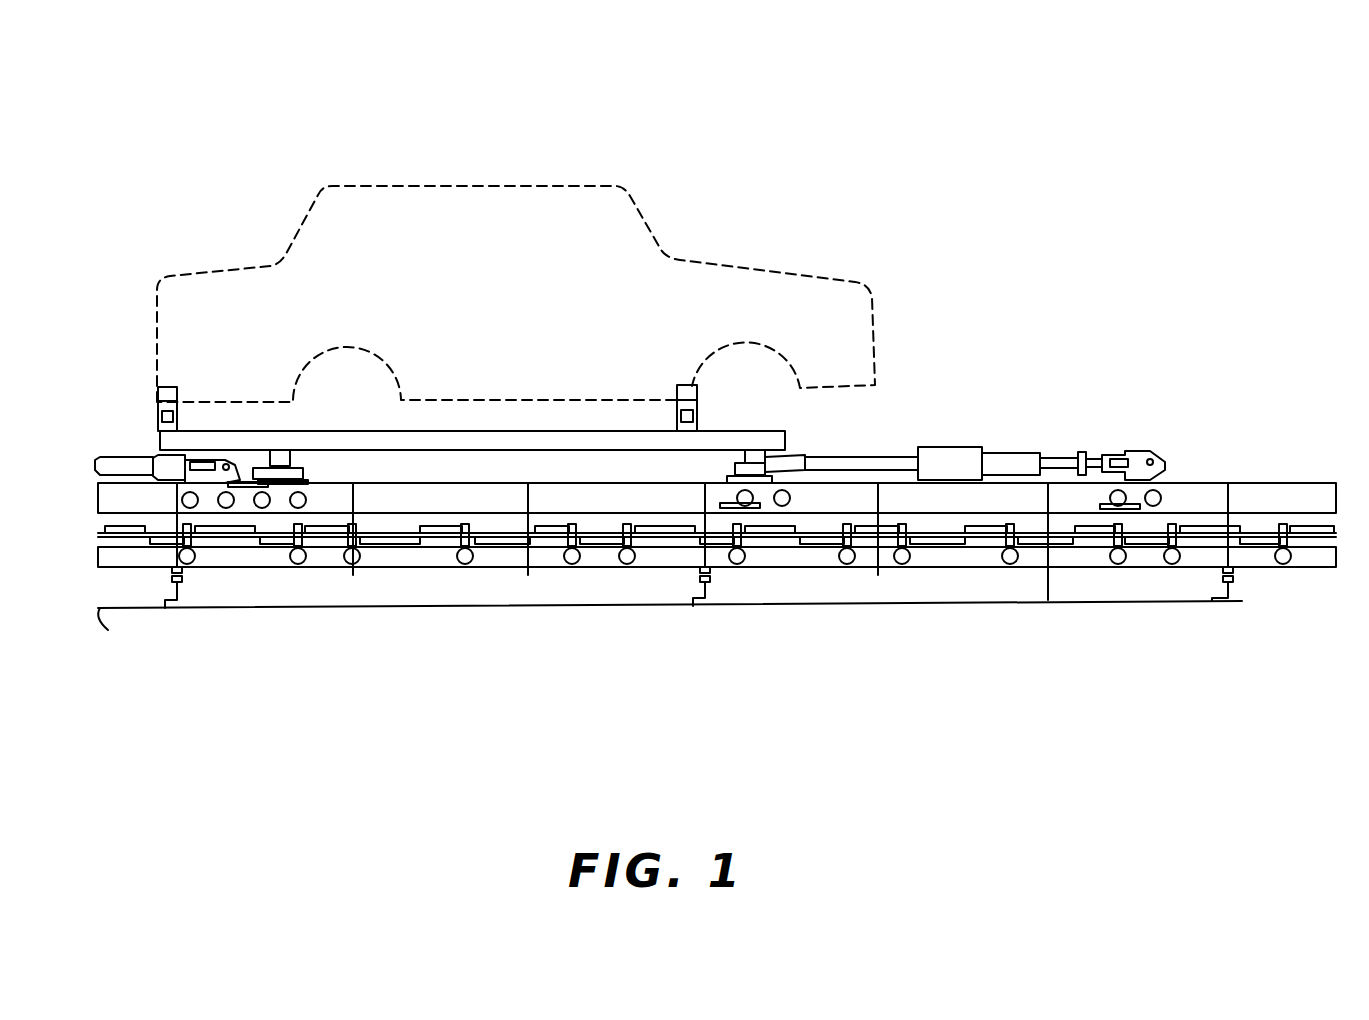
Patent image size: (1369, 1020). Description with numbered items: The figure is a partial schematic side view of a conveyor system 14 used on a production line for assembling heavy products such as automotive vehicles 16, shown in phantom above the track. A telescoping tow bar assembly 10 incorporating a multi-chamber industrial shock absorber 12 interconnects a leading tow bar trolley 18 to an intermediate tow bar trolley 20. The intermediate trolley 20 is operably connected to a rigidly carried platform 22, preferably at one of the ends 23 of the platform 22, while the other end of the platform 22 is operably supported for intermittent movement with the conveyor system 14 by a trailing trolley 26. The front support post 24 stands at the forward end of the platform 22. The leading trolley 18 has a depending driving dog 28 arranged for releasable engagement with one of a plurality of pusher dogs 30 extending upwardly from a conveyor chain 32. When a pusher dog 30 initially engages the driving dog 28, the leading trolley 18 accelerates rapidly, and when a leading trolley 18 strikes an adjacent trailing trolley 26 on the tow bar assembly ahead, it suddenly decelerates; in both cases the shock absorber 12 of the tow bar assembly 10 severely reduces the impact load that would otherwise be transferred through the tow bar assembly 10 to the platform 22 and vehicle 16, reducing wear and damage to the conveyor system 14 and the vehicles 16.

The telescoping tow bar assembly 10 is at (1090, 322).
The multi-chamber industrial shock absorber 12 is at (88, 442).
The conveyor system 14 is at (414, 665).
The automotive vehicle 16 is at (623, 185).
The leading tow bar trolley 18 is at (196, 462).
The intermediate tow bar trolley 20 is at (740, 482).
The platform 22 is at (405, 452).
The end of the platform 23 is at (790, 437).
The front support post 24 is at (158, 446).
The trailing trolley 26 is at (262, 462).
The driving dog 28 is at (1167, 517).
The pusher dog 30 is at (307, 543).
The conveyor chain 32 is at (965, 535).